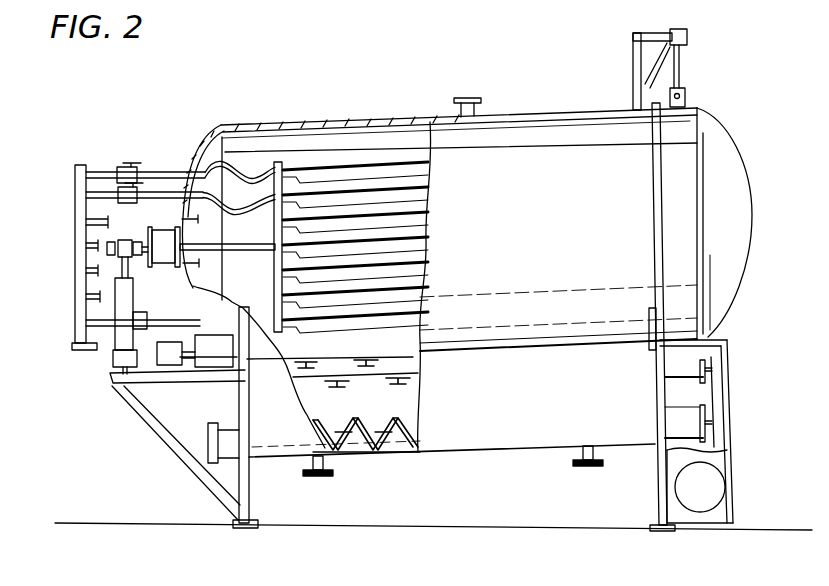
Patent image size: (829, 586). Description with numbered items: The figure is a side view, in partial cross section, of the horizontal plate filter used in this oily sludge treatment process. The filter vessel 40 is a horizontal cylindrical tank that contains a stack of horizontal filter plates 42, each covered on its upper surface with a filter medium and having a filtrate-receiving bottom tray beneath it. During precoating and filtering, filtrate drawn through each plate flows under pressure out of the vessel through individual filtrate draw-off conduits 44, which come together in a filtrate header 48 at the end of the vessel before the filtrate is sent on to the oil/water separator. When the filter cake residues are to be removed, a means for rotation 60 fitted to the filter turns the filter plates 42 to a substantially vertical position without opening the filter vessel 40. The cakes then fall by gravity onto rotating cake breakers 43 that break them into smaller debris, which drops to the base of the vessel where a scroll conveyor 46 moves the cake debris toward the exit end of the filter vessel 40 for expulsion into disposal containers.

The filter vessel 40 is at (383, 120).
The filter plates 42 is at (325, 165).
The rotating cake breakers 43 is at (368, 380).
The filtrate draw-off conduits 44 is at (163, 170).
The scroll conveyor 46 is at (353, 443).
The filtrate header 48 is at (75, 195).
The means for rotation 60 is at (118, 342).